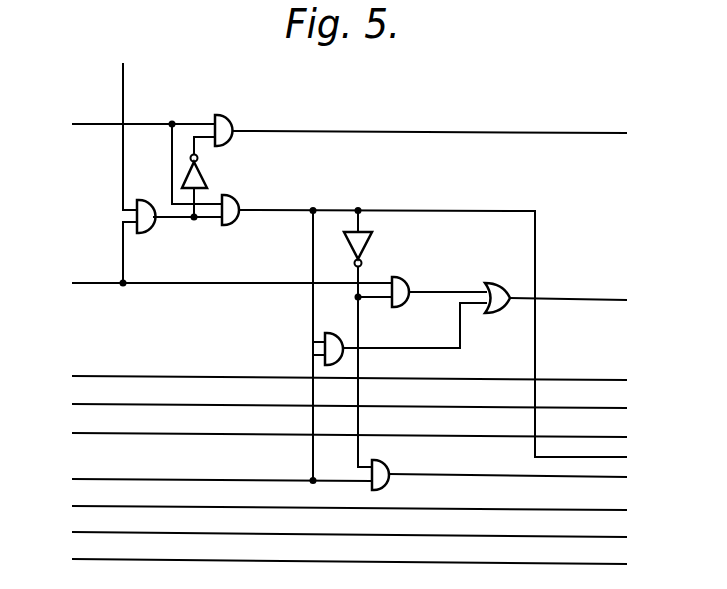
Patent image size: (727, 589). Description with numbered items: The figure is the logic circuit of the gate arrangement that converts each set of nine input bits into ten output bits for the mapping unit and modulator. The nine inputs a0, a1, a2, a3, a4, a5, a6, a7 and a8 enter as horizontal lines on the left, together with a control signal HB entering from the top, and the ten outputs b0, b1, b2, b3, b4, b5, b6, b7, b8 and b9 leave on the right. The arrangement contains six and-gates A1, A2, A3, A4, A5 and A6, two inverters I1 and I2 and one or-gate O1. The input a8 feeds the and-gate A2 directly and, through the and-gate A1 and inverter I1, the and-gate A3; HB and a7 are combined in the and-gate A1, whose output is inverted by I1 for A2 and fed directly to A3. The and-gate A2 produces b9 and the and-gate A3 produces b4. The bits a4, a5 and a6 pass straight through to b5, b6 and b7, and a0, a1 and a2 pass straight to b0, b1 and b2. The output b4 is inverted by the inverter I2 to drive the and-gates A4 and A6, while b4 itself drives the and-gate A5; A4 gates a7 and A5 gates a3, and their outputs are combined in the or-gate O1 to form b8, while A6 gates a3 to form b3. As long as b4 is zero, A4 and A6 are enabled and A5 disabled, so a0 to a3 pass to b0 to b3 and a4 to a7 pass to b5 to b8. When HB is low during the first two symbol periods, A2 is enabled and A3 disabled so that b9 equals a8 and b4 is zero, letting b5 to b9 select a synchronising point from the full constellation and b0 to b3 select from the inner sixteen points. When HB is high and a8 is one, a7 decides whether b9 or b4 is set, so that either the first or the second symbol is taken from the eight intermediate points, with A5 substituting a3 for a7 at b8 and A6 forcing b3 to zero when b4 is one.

The signal HB is at (121, 124).
The input bit a8 is at (132, 158).
The input bit a7 is at (217, 259).
The input bit a6 is at (335, 377).
The input bit a5 is at (335, 405).
The input bit a4 is at (335, 434).
The input bit a3 is at (207, 480).
The input bit a2 is at (335, 507).
The input bit a1 is at (335, 533).
The input bit a0 is at (335, 560).
The output bit b9 is at (445, 134).
The output bit b8 is at (583, 301).
The output bit b7 is at (644, 381).
The output bit b6 is at (644, 409).
The output bit b5 is at (644, 438).
The output bit b4 is at (448, 338).
The output bit b3 is at (523, 478).
The output bit b2 is at (644, 511).
The output bit b1 is at (644, 538).
The output bit b0 is at (644, 565).
The and-gate A1 is at (154, 226).
The and-gate A2 is at (240, 126).
The and-gate A3 is at (245, 203).
The and-gate A4 is at (415, 287).
The and-gate A5 is at (331, 337).
The and-gate A6 is at (394, 467).
The inverter I1 is at (205, 172).
The inverter I2 is at (368, 249).
The or-gate O1 is at (500, 312).